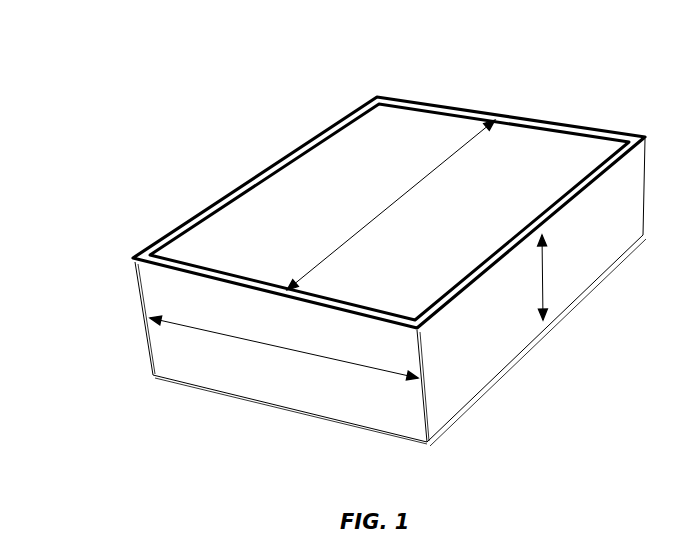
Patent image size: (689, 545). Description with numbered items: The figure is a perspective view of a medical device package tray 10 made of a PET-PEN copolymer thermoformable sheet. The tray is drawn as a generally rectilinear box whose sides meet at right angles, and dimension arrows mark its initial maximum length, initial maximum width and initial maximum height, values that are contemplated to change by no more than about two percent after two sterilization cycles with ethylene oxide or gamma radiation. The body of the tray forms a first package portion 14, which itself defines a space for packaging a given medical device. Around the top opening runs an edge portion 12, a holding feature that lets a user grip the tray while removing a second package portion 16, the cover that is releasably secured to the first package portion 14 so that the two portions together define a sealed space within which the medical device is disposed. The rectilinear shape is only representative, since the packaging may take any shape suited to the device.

The medical device package tray 10 is at (240, 121).
The edge portion 12 is at (566, 118).
The first package portion 14 is at (138, 342).
The second package portion 16 is at (398, 122).